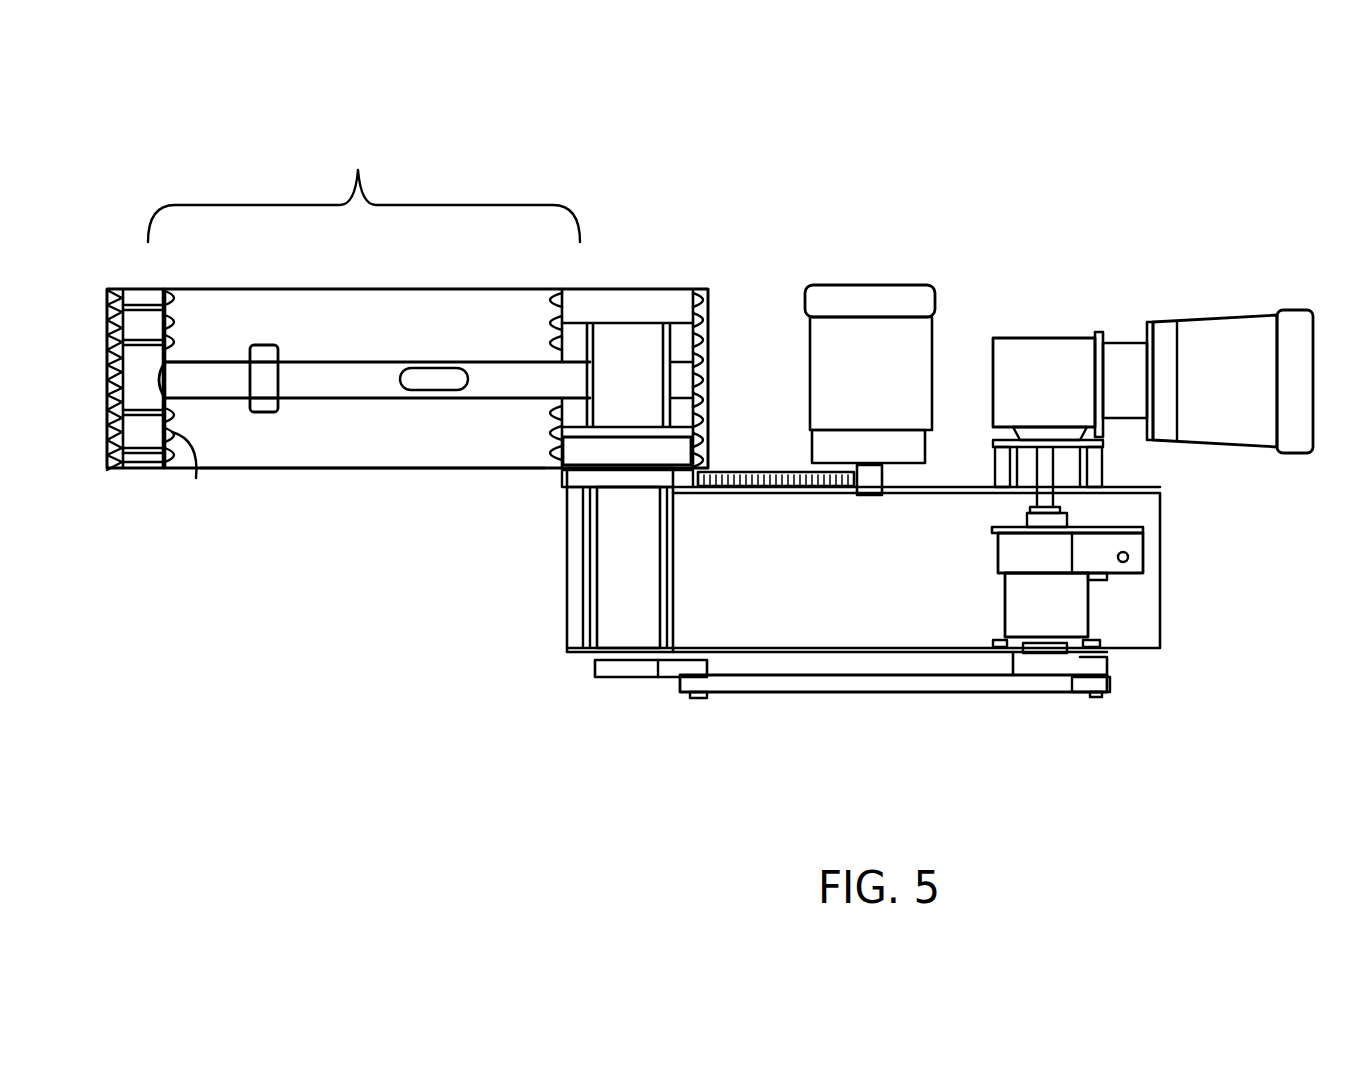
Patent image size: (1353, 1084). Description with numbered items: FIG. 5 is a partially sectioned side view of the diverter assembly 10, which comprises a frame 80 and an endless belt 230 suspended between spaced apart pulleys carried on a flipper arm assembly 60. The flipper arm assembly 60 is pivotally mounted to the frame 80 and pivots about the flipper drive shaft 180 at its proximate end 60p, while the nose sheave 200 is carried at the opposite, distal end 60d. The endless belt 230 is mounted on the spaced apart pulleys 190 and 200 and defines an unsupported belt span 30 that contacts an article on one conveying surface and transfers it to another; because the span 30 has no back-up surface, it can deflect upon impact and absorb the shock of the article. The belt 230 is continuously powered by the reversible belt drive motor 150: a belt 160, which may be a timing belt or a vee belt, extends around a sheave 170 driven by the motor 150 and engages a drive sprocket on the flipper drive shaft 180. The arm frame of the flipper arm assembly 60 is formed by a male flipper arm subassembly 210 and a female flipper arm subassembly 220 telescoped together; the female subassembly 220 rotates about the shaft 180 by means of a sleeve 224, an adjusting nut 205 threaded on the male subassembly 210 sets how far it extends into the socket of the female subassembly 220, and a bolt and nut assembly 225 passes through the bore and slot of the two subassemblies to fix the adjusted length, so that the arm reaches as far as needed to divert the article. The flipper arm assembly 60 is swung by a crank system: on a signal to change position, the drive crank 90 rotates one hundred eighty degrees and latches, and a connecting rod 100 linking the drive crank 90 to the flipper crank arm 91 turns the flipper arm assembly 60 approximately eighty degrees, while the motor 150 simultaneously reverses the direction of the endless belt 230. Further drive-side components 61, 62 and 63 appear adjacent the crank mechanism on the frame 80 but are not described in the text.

The diverter assembly 10 is at (999, 258).
The unsupported belt span 30 is at (398, 283).
The flipper arm assembly 60 is at (293, 600).
The distal end of cylinder 60d is at (120, 270).
The proximate end 60p is at (617, 263).
The knob 61 is at (1207, 367).
The gearbox 62 is at (1163, 548).
The clamp 63 is at (1128, 613).
The frame 80 is at (768, 622).
The drive crank 90 is at (1120, 676).
The flipper crank arm 91 is at (663, 677).
The connecting rod 100 is at (833, 688).
The belt drive motor 150 is at (910, 372).
The belt 160 is at (763, 468).
The sheave 170 is at (867, 493).
The flipper drive shaft 180 is at (553, 435).
The pulley 190 is at (547, 432).
The nose sheave 200 is at (196, 478).
The adjusting nut 205 is at (268, 412).
The male flipper arm subassembly 210 is at (238, 358).
The female flipper arm subassembly 220 is at (380, 404).
The sleeve 224 is at (640, 385).
The bolt and nut assembly 225 is at (452, 363).
The endless belt 230 is at (300, 450).